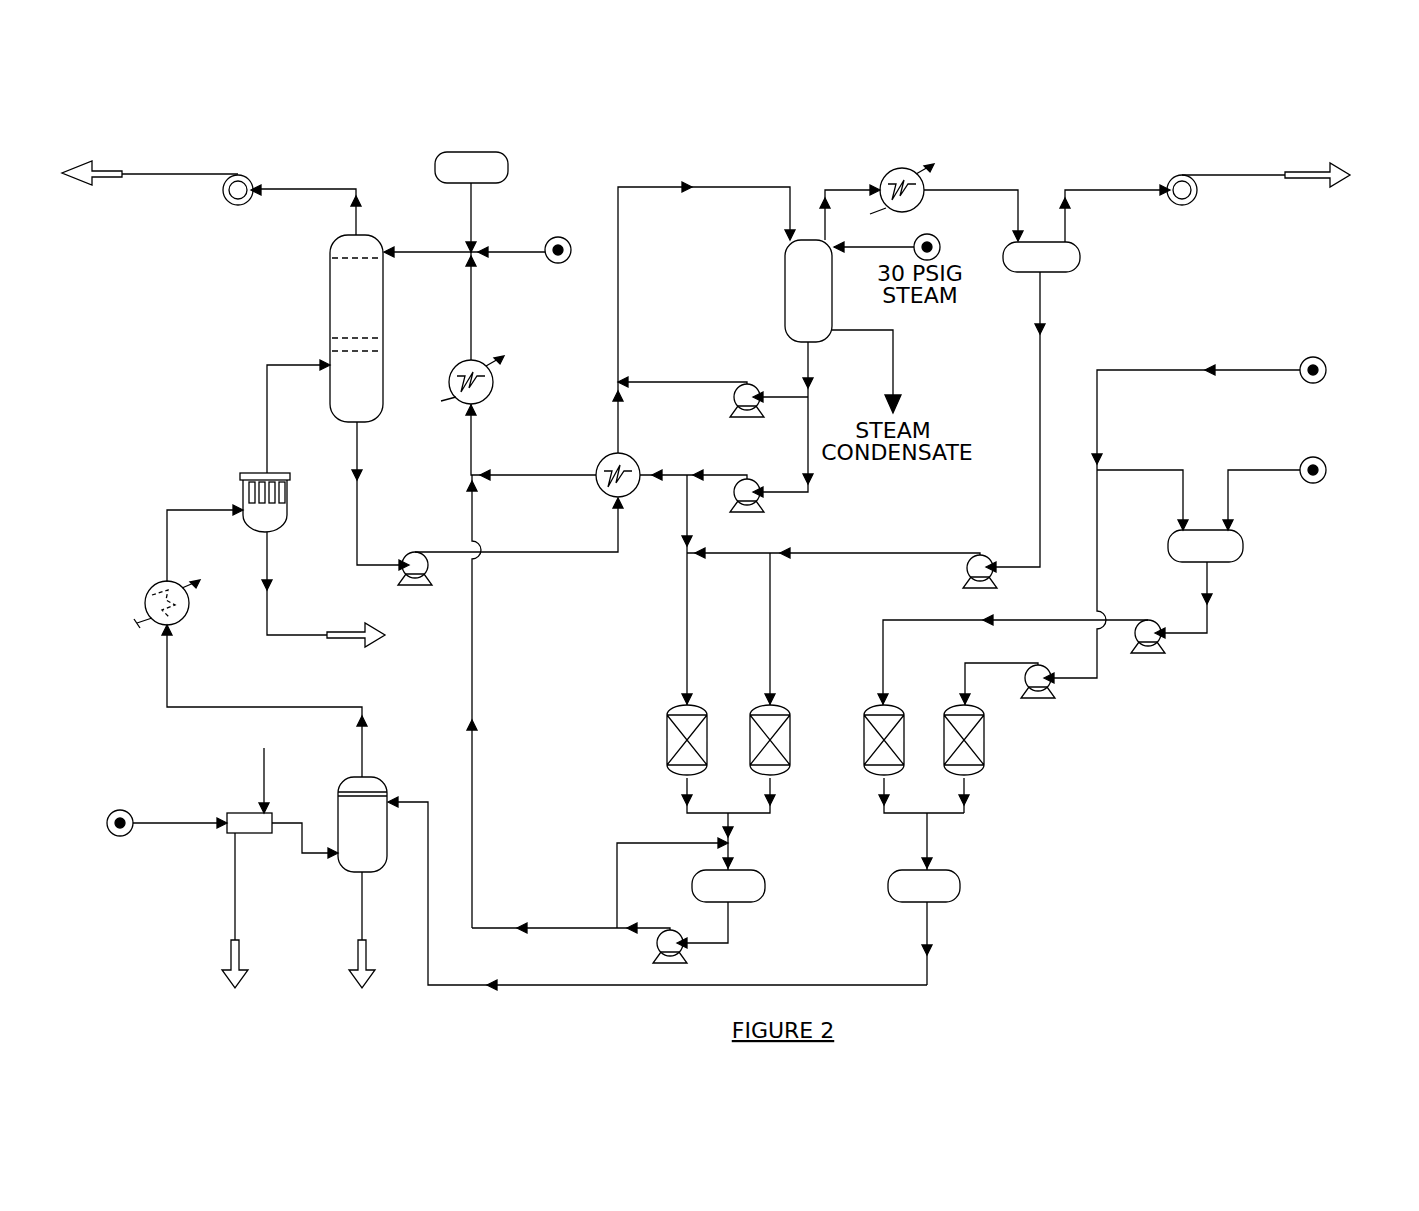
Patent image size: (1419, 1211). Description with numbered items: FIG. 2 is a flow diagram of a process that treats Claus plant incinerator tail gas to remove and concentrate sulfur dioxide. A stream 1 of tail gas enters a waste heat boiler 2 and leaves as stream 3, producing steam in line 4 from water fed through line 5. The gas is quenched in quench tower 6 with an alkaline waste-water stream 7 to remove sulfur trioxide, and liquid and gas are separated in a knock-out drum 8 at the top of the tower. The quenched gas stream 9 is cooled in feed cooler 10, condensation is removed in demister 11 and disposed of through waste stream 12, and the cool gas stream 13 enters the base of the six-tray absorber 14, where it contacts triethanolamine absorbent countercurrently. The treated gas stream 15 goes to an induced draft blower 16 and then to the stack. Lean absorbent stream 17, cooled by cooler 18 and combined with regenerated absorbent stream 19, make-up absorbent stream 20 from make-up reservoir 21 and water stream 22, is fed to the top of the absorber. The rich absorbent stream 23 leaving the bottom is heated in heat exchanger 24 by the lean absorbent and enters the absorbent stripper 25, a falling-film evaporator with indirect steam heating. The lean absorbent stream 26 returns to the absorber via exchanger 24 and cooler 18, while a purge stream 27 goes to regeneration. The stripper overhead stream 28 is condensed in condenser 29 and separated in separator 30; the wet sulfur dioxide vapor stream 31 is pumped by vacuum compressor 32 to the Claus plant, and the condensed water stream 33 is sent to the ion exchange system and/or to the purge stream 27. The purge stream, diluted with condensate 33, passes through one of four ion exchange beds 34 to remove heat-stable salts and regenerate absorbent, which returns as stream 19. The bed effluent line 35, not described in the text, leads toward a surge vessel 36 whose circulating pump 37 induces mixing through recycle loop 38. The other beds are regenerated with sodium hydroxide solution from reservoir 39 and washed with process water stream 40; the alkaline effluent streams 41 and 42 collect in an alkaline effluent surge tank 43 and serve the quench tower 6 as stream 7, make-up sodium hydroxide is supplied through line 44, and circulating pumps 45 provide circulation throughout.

The tail gas stream 1 is at (175, 823).
The waste heat boiler 2 is at (243, 812).
The boiler exit gas stream 3 is at (301, 858).
The steam line 4 is at (237, 926).
The boiler water line 5 is at (266, 777).
The quench tower 6 is at (355, 906).
The alkaline waste-water stream 7 is at (446, 985).
The knock-out drum 8 is at (376, 781).
The quenched gas stream 9 is at (268, 707).
The feed cooler 10 is at (154, 588).
The demister 11 is at (241, 506).
The waste stream 12 is at (290, 635).
The cool gas stream 13 is at (266, 418).
The absorber 14 is at (356, 328).
The treated gas stream 15 is at (303, 189).
The induced draft blower 16 is at (232, 176).
The lean absorbent stream 17 is at (442, 252).
The cooler 18 is at (456, 366).
The regenerated absorbent stream 19 is at (474, 530).
The make-up absorbent stream 20 is at (472, 228).
The make-up reservoir 21 is at (471, 167).
The water stream 22 is at (526, 250).
The rich absorbent stream 23 is at (653, 188).
The heat exchanger 24 is at (601, 458).
The absorbent stripper 25 is at (808, 291).
The lean absorbent stream 26 is at (810, 415).
The purge stream 27 is at (684, 526).
The stripper overhead stream 28 is at (845, 190).
The condenser 29 is at (898, 167).
The separator 30 is at (1041, 257).
The wet sulfur dioxide vapor stream 31 is at (1085, 190).
The vacuum compressor 32 is at (1178, 205).
The condensed water stream 33 is at (1038, 397).
The ion exchange beds 34 is at (666, 726).
The column effluent line 35 is at (686, 790).
The surge vessel 36 is at (721, 909).
The circulating pump 37 is at (670, 930).
The recycle loop 38 is at (616, 870).
The sodium hydroxide reservoir 39 is at (1060, 617).
The process water stream 40 is at (1099, 428).
The alkaline effluent stream 41 is at (883, 790).
The alkaline effluent stream 42 is at (965, 795).
The alkaline effluent surge tank 43 is at (924, 927).
The make-up sodium hydroxide line 44 is at (1262, 470).
The circulating pumps 45 is at (745, 383).